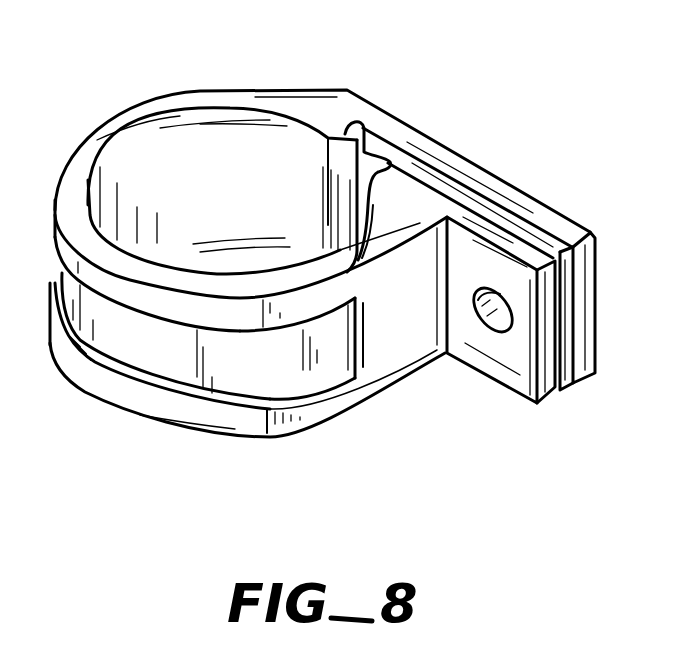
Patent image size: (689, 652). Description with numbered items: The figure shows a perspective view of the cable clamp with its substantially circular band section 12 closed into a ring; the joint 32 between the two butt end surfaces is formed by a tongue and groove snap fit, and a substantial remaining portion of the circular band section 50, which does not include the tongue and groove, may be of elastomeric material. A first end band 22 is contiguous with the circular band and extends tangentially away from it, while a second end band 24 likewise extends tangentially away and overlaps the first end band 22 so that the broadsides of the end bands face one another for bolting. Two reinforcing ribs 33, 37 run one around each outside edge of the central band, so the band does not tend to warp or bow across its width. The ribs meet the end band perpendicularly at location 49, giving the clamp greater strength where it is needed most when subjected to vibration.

The circular band section 12 is at (113, 337).
The first end band 22 is at (517, 398).
The second end band 24 is at (535, 210).
The joint 32 is at (397, 146).
The reinforcing rib 33 is at (55, 237).
The reinforcing rib 37 is at (190, 417).
The location where ribs meet end band 49 is at (375, 330).
The remaining portion of the circular band section 50 is at (223, 165).